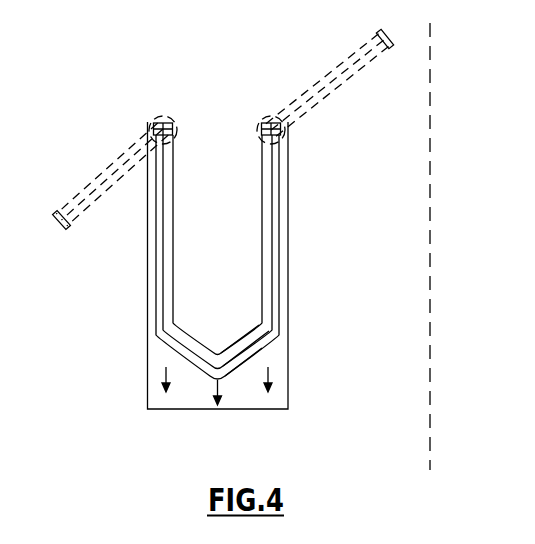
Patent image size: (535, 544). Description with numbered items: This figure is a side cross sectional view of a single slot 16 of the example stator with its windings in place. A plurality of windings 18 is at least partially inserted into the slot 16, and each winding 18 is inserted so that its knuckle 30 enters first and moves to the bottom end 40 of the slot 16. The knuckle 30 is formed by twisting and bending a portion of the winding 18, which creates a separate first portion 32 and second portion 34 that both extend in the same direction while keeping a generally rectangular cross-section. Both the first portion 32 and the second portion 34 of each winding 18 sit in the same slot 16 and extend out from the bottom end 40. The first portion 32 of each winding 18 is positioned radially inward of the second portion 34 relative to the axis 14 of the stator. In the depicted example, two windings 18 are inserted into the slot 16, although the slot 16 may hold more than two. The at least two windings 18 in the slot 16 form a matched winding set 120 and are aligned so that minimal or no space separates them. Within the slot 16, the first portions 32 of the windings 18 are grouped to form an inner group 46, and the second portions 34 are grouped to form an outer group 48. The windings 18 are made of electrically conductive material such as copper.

The axis 14 is at (432, 229).
The slot 16 is at (288, 379).
The winding 18 is at (256, 355).
The knuckle 30 is at (224, 373).
The first portion 32 is at (265, 188).
The second portion 34 is at (172, 240).
The bottom end 40 is at (195, 398).
The inner group 46 is at (256, 136).
The outer group 48 is at (177, 119).
The matched winding set 120 is at (168, 103).